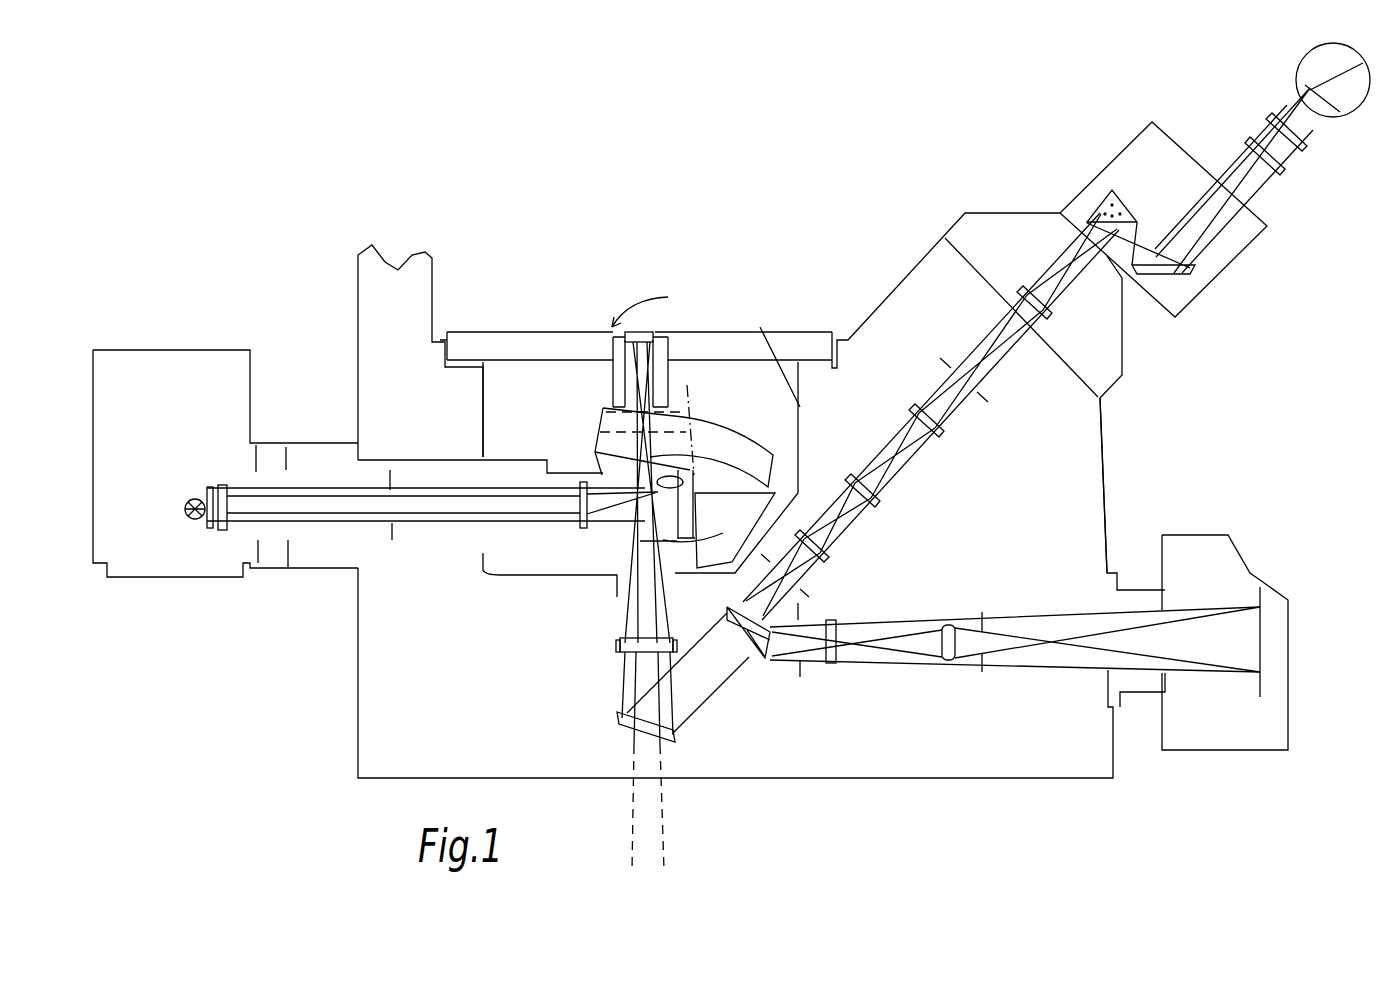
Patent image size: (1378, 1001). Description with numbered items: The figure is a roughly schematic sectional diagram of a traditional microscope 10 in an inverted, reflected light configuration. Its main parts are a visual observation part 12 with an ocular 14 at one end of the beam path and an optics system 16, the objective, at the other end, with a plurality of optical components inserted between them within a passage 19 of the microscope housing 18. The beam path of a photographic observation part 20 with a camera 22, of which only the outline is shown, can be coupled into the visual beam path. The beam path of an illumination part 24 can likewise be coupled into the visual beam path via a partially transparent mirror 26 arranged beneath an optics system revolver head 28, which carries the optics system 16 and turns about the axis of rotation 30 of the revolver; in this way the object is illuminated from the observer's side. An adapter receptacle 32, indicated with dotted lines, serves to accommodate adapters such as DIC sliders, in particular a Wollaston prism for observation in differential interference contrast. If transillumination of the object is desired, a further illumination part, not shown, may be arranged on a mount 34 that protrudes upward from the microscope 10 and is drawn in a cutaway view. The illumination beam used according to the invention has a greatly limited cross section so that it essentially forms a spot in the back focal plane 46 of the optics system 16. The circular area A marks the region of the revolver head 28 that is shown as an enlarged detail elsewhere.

The microscope 10 is at (898, 200).
The visual observation part 12 is at (950, 222).
The ocular 14 is at (1242, 111).
The optics system 16 is at (667, 377).
The microscope housing 18 is at (1105, 445).
The passage 19 is at (607, 597).
The photographic observation part 20 is at (1137, 590).
The camera 22 is at (1213, 752).
The illumination part 24 is at (318, 442).
The partially transparent mirror 26 is at (687, 477).
The optics system revolver head 28 is at (773, 447).
The axis of rotation 30 is at (717, 357).
The adapter receptacle 32 is at (578, 463).
The mount 34 is at (360, 282).
The back focal plane 46 is at (612, 385).
The circular area A is at (760, 327).